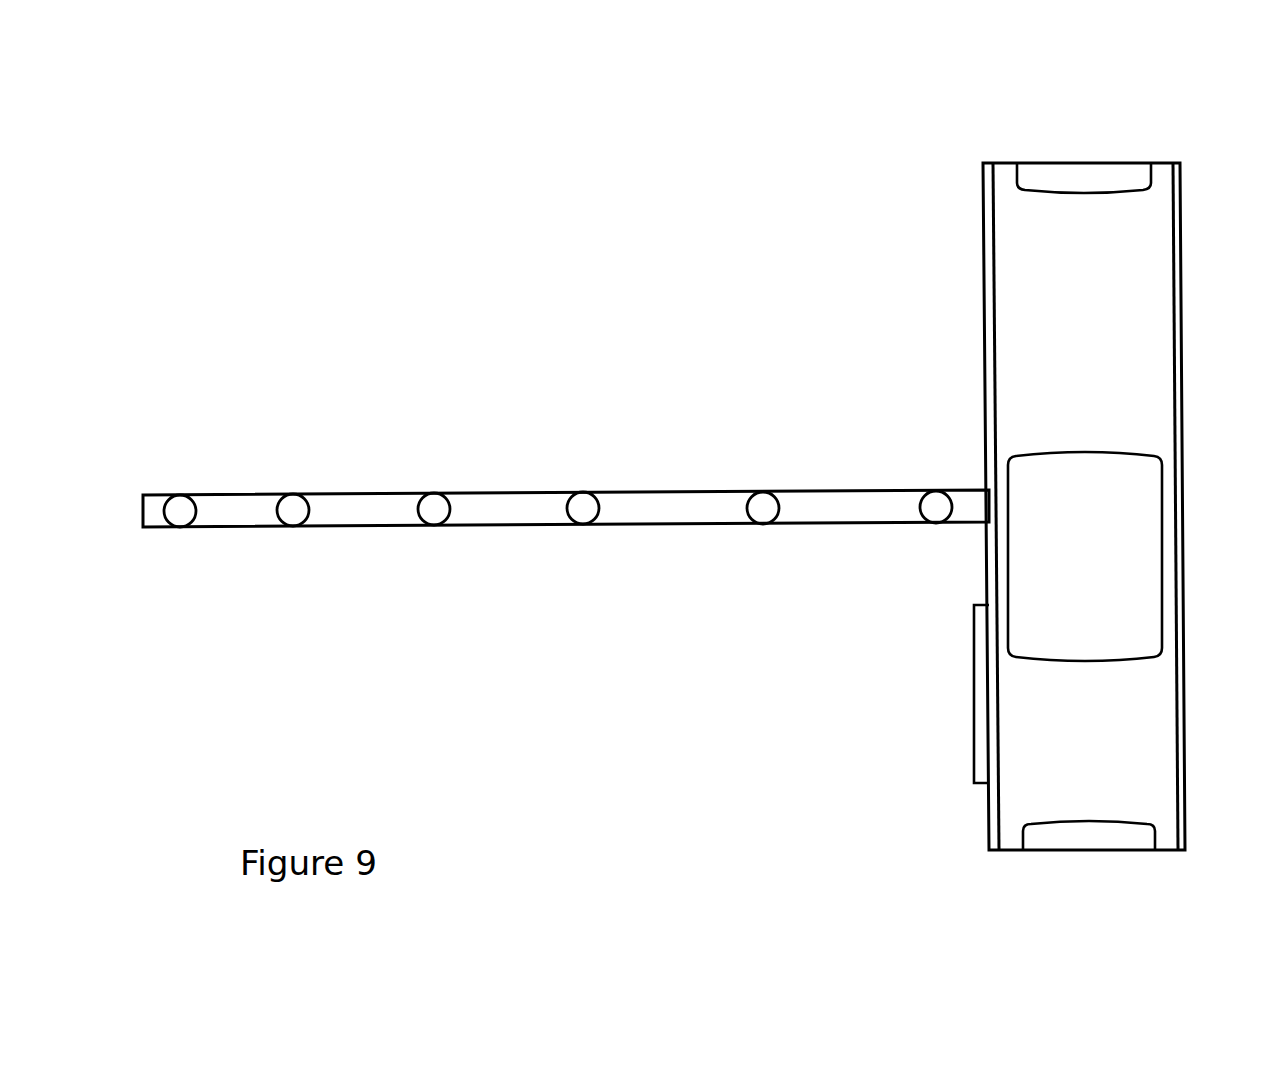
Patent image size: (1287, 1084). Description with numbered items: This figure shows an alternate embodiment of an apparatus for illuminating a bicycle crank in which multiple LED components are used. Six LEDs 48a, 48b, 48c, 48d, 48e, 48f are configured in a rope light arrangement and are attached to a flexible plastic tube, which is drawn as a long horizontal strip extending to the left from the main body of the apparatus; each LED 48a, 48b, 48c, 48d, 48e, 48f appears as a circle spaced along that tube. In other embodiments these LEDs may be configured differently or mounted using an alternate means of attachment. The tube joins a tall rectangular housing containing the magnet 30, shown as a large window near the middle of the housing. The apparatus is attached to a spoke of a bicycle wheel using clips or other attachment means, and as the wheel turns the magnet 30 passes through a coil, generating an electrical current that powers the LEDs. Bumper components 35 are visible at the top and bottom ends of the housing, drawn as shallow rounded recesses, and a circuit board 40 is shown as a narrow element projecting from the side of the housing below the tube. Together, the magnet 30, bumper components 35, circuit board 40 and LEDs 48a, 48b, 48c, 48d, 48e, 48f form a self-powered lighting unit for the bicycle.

The magnet 30 is at (1122, 580).
The bumper components 35 is at (1066, 175).
The circuit board 40 is at (973, 694).
The LED 48a is at (181, 495).
The LED 48b is at (295, 527).
The LED 48c is at (434, 493).
The LED 48d is at (584, 525).
The LED 48e is at (764, 492).
The LED 48f is at (937, 524).